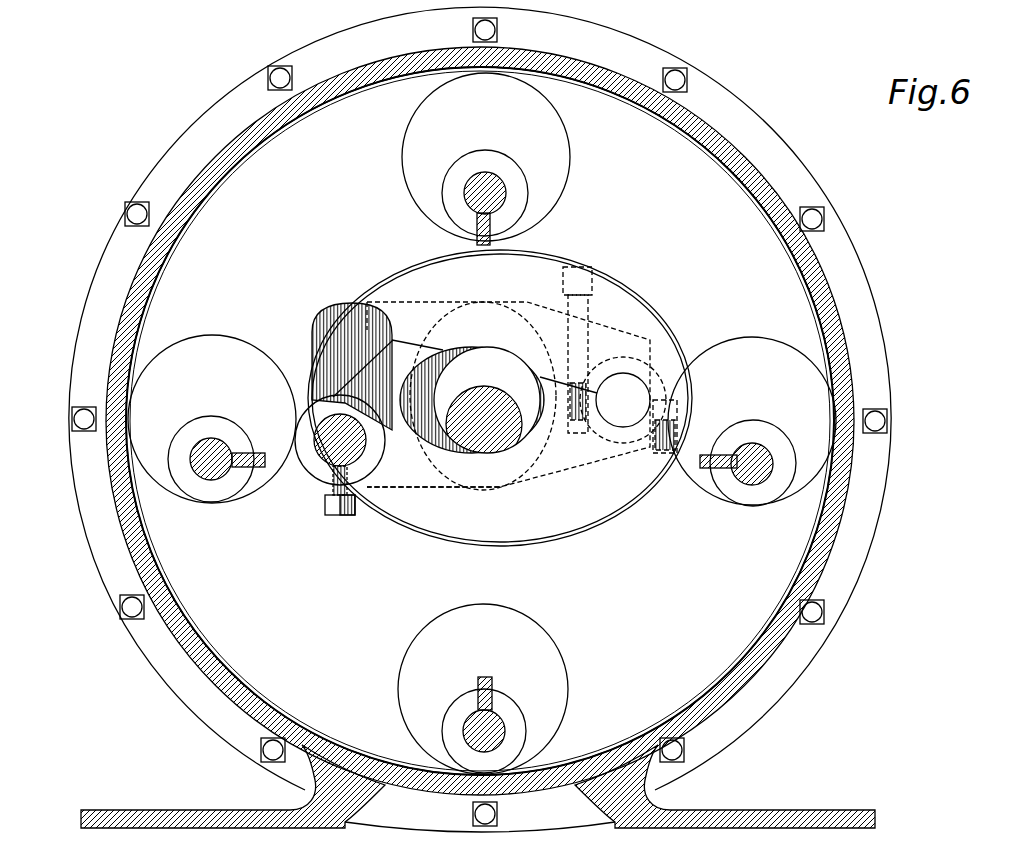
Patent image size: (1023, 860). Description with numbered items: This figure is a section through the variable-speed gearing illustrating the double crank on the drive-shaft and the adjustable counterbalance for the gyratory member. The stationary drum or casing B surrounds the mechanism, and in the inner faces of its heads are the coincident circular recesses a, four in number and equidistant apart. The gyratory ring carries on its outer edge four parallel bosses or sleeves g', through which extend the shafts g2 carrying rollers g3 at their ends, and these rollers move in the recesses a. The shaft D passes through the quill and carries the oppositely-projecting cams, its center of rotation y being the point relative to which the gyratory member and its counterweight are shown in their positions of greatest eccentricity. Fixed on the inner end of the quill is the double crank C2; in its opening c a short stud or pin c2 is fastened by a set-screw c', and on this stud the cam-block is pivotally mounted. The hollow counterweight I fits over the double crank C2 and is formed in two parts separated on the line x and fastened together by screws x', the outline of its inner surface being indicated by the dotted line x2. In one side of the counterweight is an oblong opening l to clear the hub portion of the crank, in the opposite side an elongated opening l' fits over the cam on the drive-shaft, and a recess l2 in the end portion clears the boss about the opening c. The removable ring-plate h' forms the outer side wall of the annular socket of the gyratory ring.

The stationary drum or casing B is at (233, 147).
The circular recesses a is at (555, 128).
The bosses or sleeves g' is at (489, 430).
The shafts g2 is at (505, 193).
The rollers g3 is at (461, 170).
The hollow counterweight I is at (538, 270).
The separation line x is at (351, 347).
The screws x' is at (547, 378).
The dotted line of inner surface x2 is at (573, 470).
The oblong opening l is at (478, 283).
The recess or opening l2 is at (370, 330).
The elongated opening l' is at (404, 470).
The center of rotation y is at (483, 420).
The shaft D is at (452, 437).
The removable ring-plate h' is at (639, 380).
The double crank C2 is at (383, 392).
The short stud or pin c2 is at (327, 427).
The opening c is at (311, 489).
The set-screw c' is at (335, 525).